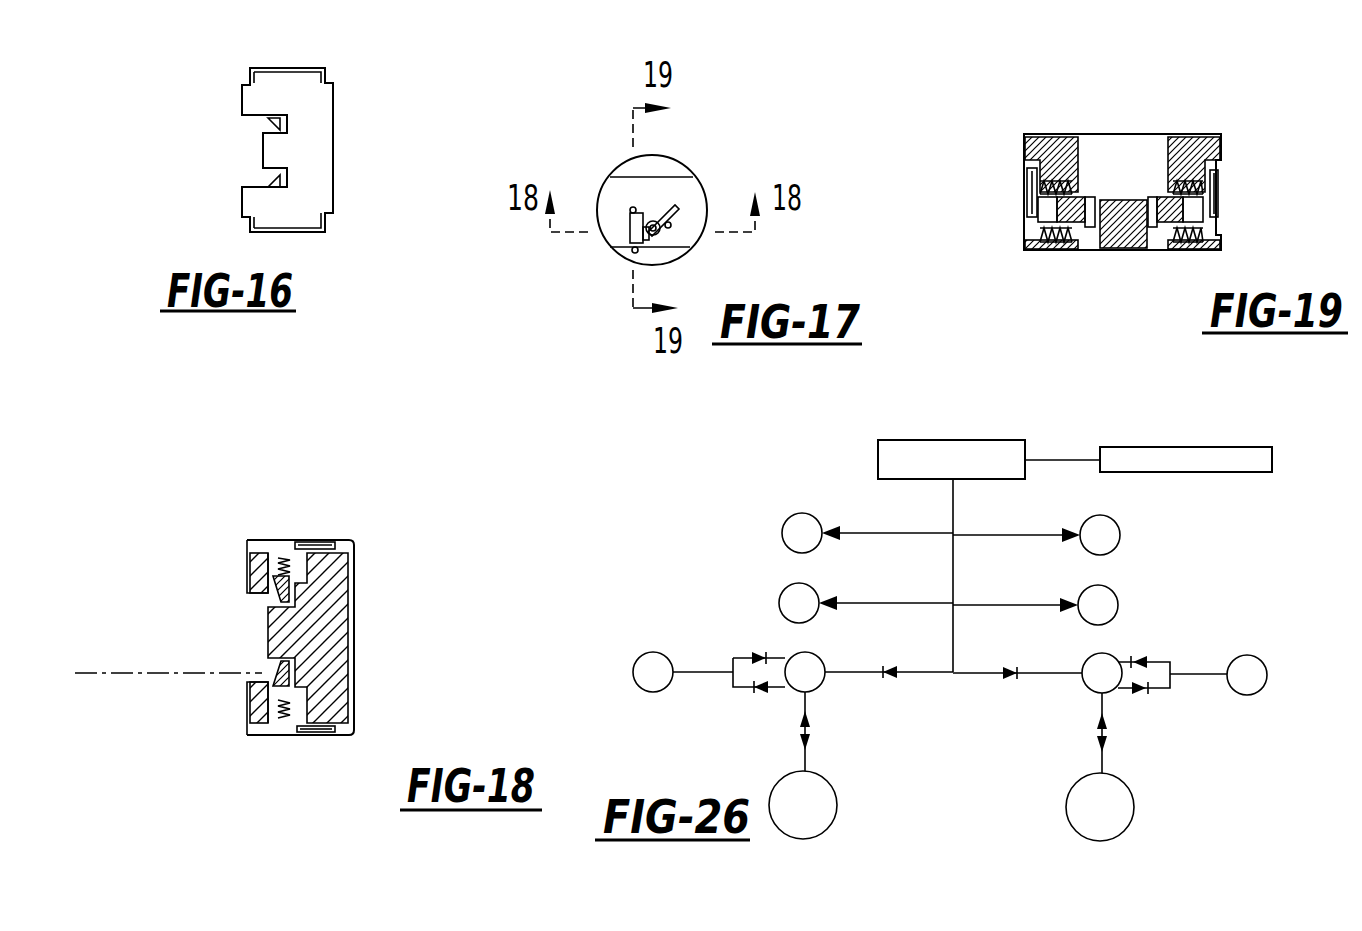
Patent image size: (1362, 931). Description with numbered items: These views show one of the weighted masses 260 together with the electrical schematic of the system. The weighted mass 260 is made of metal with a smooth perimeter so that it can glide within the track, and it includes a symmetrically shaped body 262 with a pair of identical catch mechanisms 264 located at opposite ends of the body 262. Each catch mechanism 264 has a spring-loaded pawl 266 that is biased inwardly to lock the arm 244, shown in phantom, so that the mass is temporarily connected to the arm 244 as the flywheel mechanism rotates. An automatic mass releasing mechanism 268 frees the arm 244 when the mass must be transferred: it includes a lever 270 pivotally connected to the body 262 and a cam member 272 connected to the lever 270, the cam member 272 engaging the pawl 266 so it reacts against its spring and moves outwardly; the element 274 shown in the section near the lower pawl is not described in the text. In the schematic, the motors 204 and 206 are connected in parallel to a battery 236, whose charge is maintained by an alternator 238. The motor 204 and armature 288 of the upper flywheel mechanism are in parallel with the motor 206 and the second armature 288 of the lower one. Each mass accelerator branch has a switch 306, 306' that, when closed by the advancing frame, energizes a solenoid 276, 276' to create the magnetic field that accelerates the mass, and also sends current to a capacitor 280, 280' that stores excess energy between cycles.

In FIG. 16, the weighted mass 260 is at (240, 148).
In FIG. 18, the weighted mass 260 is at (178, 546).
In FIG. 16, the body 262 is at (327, 124).
In FIG. 17, the body 262 is at (667, 163).
In FIG. 19, the body 262 is at (1187, 143).
In FIG. 18, the body 262 is at (336, 626).
In FIG. 18, the catch mechanism 264 is at (279, 540).
In FIG. 19, the spring-loaded pawl 266 is at (1177, 212).
In FIG. 18, the spring-loaded pawl 266 is at (277, 600).
In FIG. 18, the automatic mass releasing mechanism 268 is at (318, 750).
In FIG. 17, the lever 270 is at (683, 215).
In FIG. 19, the lever 270 is at (1219, 185).
In FIG. 18, the lever 270 is at (336, 543).
In FIG. 17, the cam member 272 is at (630, 224).
In FIG. 18, the cam member 272 is at (284, 565).
In FIG. 18, the pawl 274 is at (272, 704).
In FIG. 18, the arm 244 is at (98, 676).
In FIG. 26, the battery 236 is at (876, 464).
In FIG. 26, the alternator 238 is at (1272, 460).
In FIG. 26, the motor 204 is at (782, 537).
In FIG. 26, the motor 206 is at (1120, 543).
In FIG. 26, the armature 288 is at (779, 606).
In FIG. 26, the capacitor 280 is at (660, 700).
In FIG. 26, the capacitor 280' is at (1254, 703).
In FIG. 26, the electrical switch 306 is at (843, 711).
In FIG. 26, the electrical switch 306' is at (1089, 713).
In FIG. 26, the solenoid 276 is at (856, 805).
In FIG. 26, the solenoid 276' is at (1163, 809).